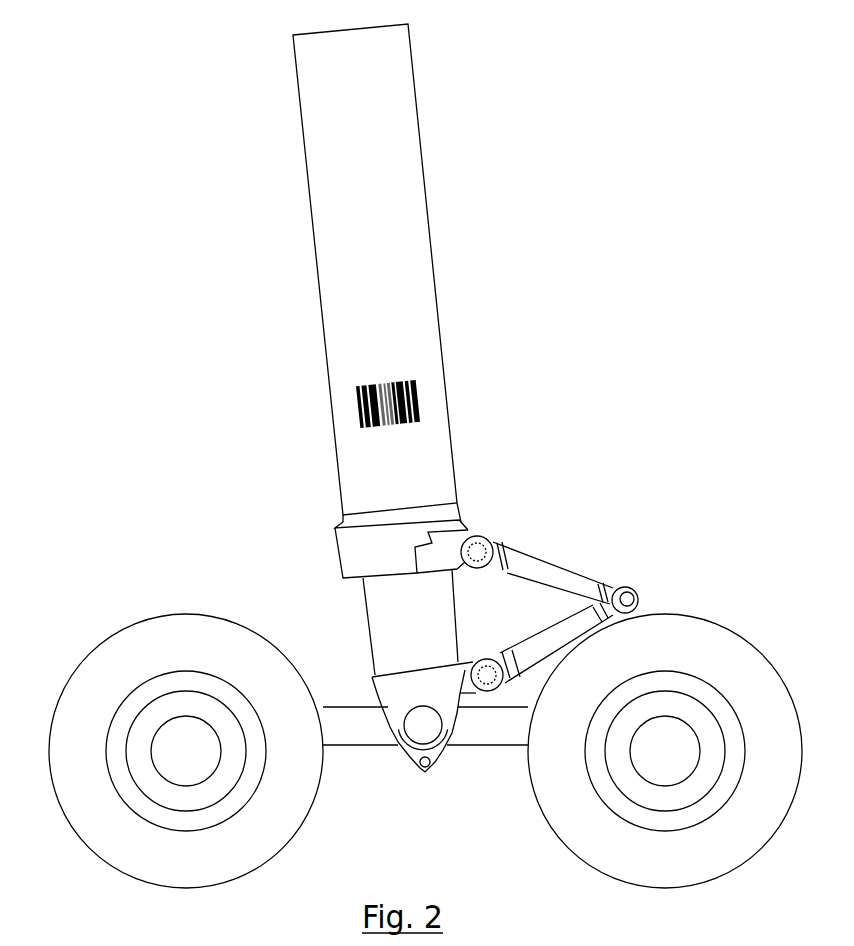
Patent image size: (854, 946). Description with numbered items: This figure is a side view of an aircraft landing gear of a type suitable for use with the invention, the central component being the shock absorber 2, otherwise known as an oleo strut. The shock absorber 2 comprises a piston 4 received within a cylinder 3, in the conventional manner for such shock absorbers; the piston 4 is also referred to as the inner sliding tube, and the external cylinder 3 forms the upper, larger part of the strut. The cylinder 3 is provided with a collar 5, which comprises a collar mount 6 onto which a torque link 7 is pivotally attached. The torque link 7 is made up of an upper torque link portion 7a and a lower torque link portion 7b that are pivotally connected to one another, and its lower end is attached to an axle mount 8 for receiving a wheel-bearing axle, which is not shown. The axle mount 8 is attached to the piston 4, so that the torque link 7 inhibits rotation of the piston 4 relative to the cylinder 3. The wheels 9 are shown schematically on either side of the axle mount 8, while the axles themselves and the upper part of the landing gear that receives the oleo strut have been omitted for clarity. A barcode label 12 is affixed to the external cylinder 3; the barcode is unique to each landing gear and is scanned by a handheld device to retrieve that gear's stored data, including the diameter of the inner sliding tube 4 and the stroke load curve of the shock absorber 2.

The shock absorber 2 is at (478, 242).
The cylinder 3 is at (398, 467).
The piston 4 is at (393, 632).
The collar 5 is at (352, 545).
The collar mount 6 is at (443, 552).
The torque link 7 is at (594, 566).
The upper torque link portion 7a is at (533, 563).
The lower torque link portion 7b is at (538, 640).
The axle mount 8 is at (420, 680).
The wheels 9 is at (112, 848).
The barcode label 12 is at (417, 408).